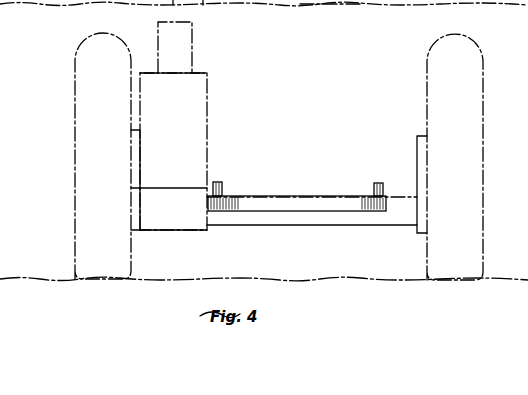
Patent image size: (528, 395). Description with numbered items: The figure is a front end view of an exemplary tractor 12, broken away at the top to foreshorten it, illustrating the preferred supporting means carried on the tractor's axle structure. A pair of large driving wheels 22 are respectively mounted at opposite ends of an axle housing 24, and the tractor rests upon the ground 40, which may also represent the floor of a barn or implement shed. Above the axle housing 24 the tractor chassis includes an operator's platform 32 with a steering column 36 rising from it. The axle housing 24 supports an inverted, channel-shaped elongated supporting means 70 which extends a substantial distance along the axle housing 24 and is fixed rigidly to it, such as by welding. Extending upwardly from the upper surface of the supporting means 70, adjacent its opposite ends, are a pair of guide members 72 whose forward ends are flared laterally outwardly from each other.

The tractor 12 is at (212, 119).
The driving wheels 22 is at (83, 182).
The axle housing 24 is at (306, 219).
The operator's platform 32 is at (207, 73).
The steering column 36 is at (192, 38).
The ground 40 is at (330, 5).
The supporting means 70 is at (345, 212).
The guide members 72 is at (220, 182).